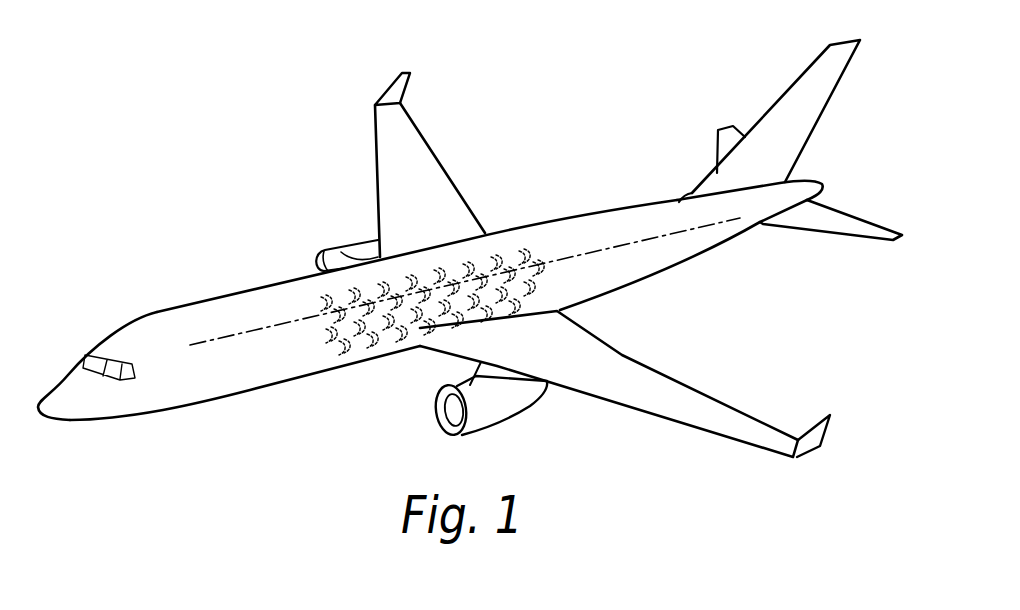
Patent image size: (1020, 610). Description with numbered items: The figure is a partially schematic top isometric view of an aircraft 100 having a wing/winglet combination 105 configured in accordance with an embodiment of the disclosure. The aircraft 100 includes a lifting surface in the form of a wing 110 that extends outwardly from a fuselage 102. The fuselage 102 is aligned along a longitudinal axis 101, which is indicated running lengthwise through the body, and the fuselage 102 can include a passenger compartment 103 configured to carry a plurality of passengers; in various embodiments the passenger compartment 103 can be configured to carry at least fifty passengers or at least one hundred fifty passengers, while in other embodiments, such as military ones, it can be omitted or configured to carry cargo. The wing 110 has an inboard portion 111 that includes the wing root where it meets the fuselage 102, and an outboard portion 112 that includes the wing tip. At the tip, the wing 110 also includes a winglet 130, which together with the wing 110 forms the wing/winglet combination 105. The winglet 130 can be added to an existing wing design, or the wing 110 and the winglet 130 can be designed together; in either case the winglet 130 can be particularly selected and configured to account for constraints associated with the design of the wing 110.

The aircraft 100 is at (203, 105).
The longitudinal axis 101 is at (222, 337).
The fuselage 102 is at (155, 312).
The passenger compartment 103 is at (375, 333).
The wing/winglet combination 105 is at (418, 85).
The wing 110 is at (447, 187).
The inboard portion 111 is at (490, 212).
The outboard portion 112 is at (334, 132).
The winglet 130 is at (388, 84).